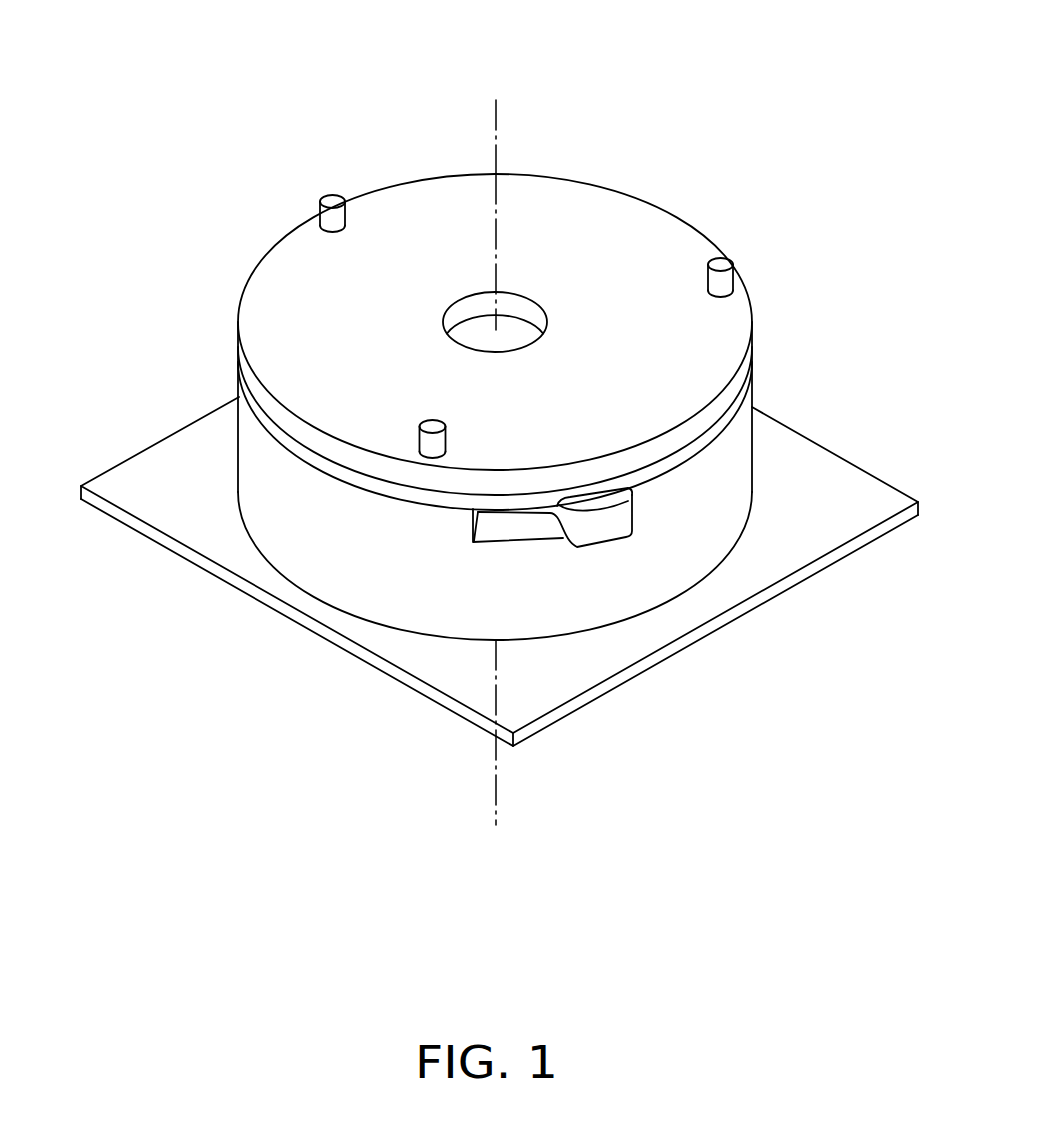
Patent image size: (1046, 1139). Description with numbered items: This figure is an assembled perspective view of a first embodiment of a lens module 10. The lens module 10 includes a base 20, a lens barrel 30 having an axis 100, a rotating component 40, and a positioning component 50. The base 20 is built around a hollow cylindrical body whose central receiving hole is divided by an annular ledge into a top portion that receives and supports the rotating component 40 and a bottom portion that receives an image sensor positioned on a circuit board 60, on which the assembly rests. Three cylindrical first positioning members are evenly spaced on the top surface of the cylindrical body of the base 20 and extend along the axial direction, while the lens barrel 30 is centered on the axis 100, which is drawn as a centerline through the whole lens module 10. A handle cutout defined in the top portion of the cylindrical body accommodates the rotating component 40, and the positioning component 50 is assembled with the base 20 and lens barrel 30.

The lens module 10 is at (540, 28).
The axis 100 is at (497, 143).
The base 20 is at (383, 582).
The lens barrel 30 is at (640, 245).
The rotating component 40 is at (610, 527).
The positioning component 50 is at (302, 452).
The circuit board 60 is at (805, 475).